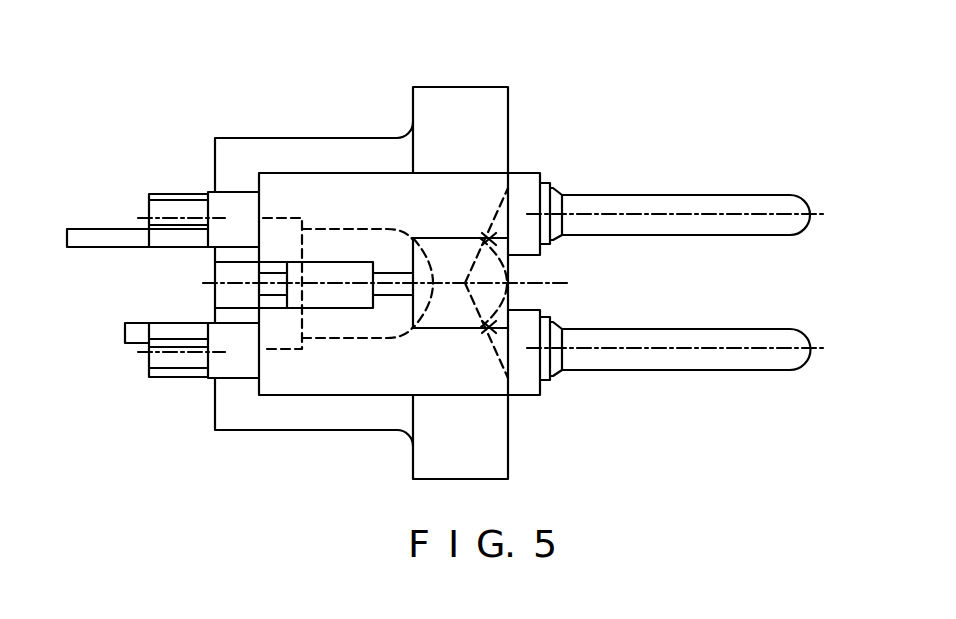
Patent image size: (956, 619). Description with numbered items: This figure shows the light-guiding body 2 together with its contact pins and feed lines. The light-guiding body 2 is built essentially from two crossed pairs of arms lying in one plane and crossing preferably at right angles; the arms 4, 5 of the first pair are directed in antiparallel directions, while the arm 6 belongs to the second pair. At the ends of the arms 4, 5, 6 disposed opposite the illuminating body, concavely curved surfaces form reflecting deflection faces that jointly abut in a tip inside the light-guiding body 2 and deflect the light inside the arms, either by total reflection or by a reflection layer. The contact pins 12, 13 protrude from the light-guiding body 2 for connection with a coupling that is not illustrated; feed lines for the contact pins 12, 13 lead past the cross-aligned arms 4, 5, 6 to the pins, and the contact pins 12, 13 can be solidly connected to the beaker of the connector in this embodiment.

The light-guiding body 2 is at (340, 205).
The arm 4 is at (480, 132).
The arm 5 is at (488, 468).
The arm 6 is at (438, 313).
The contact pin 12 is at (750, 358).
The contact pin 13 is at (692, 208).